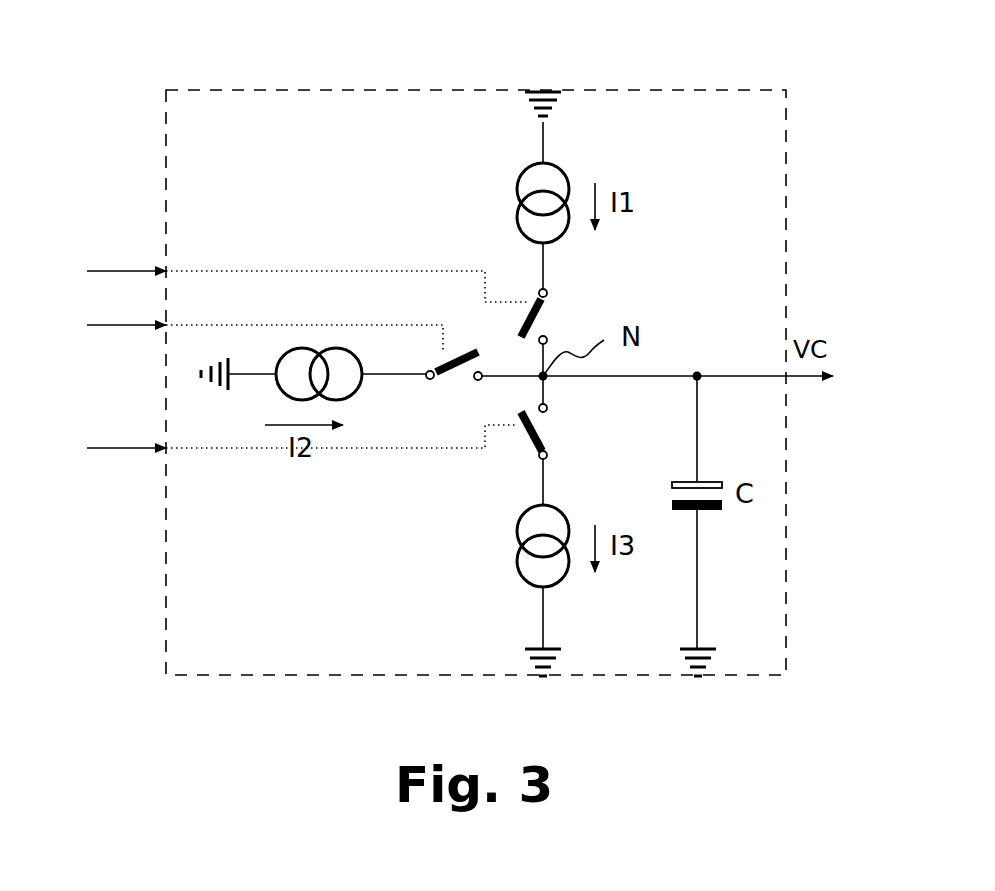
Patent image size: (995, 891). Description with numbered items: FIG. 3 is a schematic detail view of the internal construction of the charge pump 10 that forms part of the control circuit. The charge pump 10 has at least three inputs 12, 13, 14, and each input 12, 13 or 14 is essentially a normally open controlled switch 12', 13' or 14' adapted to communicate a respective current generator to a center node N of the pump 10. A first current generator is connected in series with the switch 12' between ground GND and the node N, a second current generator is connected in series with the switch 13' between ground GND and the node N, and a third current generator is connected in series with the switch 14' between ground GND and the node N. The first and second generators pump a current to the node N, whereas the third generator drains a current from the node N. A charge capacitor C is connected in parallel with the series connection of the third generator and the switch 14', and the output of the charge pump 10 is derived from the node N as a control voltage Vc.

The charge pump 10 is at (732, 113).
The input 12 is at (308, 253).
The input 13 is at (265, 345).
The input 14 is at (301, 493).
The controlled switch 12' is at (583, 317).
The controlled switch 13' is at (447, 402).
The controlled switch 14' is at (493, 468).